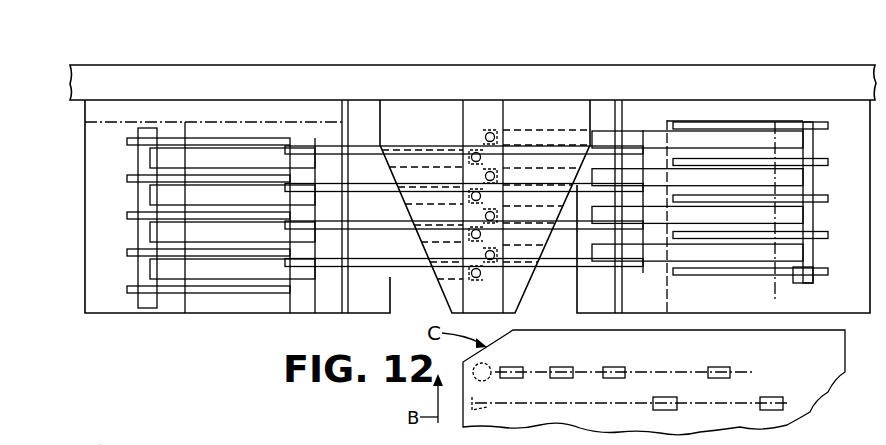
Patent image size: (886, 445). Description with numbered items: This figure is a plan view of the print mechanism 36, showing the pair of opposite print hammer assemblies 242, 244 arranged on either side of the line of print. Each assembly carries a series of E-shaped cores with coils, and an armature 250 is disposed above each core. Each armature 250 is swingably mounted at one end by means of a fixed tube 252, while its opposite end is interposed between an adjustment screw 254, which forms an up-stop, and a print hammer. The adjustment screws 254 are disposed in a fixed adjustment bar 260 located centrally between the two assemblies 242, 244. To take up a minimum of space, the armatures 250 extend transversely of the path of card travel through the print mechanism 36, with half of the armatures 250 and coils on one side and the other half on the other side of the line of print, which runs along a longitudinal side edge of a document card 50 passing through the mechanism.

The print hammer assembly 242 is at (170, 122).
The print hammer assembly 244 is at (639, 110).
The armature 250 is at (245, 157).
The fixed tube 252 is at (142, 263).
The adjustment screw 254 is at (491, 131).
The adjustment bar 260 is at (418, 122).
The document card 50 is at (810, 368).
The print mechanism 36 is at (100, 444).